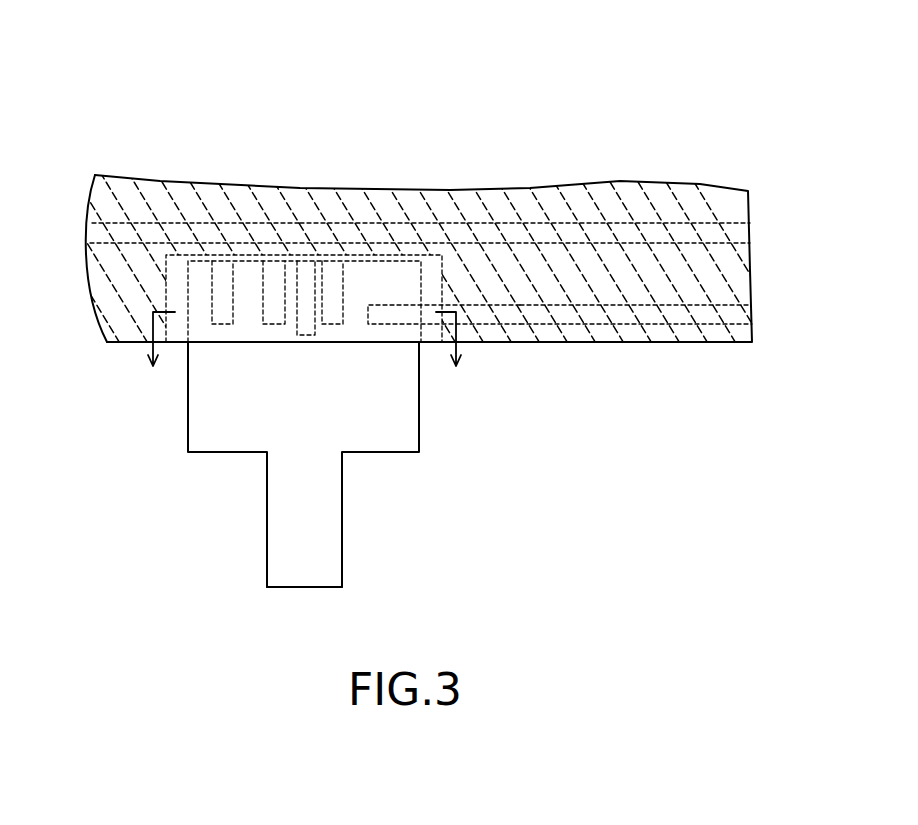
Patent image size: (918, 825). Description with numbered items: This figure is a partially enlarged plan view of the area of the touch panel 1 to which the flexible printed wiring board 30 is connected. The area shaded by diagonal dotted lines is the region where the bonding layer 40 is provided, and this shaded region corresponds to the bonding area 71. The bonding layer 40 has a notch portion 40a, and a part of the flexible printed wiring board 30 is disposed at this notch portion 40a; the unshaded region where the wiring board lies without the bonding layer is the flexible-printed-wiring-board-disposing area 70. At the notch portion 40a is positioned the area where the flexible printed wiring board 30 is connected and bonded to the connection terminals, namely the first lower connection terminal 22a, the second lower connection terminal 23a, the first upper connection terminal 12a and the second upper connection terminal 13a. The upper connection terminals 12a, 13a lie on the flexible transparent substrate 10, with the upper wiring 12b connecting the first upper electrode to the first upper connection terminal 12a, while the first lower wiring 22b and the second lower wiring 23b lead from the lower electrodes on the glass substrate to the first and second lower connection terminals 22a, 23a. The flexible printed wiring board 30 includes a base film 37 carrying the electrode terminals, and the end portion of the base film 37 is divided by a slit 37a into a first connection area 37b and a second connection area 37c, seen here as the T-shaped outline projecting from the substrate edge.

The touch panel 1 is at (705, 65).
The flexible transparent substrate 10 is at (718, 333).
The first upper connection terminal 12a is at (383, 322).
The upper wiring 12b is at (602, 323).
The second upper connection terminal 13a is at (343, 292).
The first lower connection terminal 22a is at (212, 312).
The first lower wiring 22b is at (120, 223).
The second lower connection terminal 23a is at (272, 325).
The second lower wiring 23b is at (577, 223).
The flexible printed wiring board 30 is at (367, 570).
The base film 37 is at (387, 440).
The slit 37a is at (317, 332).
The first connection area 37b is at (245, 277).
The second connection area 37c is at (403, 273).
The bonding layer 40 is at (95, 292).
The notch portion 40a is at (152, 305).
The flexible-printed-wiring-board-disposing area 70 is at (170, 268).
The bonding area 71 is at (130, 243).